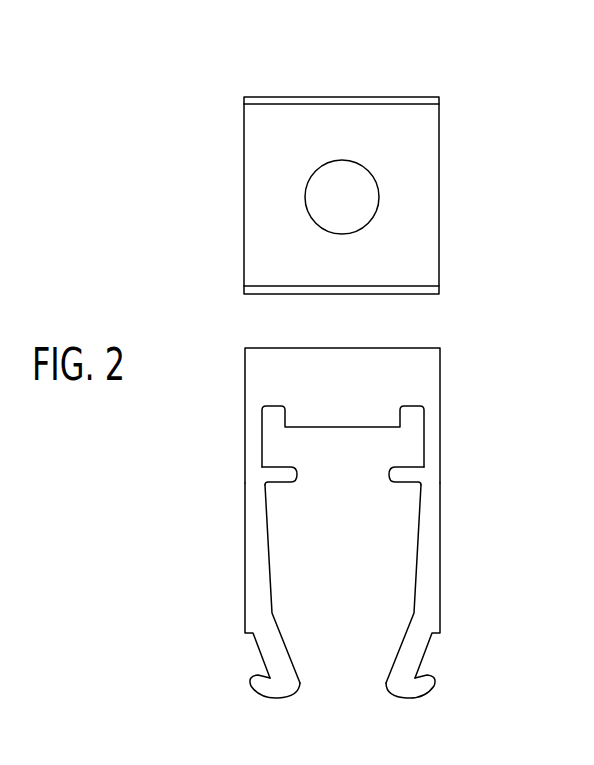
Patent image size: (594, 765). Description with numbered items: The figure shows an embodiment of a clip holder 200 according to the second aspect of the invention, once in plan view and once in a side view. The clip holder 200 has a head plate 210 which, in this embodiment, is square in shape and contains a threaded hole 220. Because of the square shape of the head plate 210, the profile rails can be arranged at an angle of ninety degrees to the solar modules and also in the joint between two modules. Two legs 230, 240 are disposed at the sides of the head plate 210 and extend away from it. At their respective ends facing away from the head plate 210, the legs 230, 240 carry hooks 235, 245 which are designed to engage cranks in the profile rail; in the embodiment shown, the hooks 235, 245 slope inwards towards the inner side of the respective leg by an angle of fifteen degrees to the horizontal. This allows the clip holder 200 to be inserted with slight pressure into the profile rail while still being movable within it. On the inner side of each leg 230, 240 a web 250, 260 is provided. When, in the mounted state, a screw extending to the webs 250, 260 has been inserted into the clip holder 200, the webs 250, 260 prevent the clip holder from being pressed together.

The clip holder 200 is at (473, 70).
The head plate 210 is at (425, 137).
The threaded hole 220 is at (380, 200).
The leg 230 is at (430, 545).
The hook 235 is at (420, 657).
The leg 240 is at (256, 548).
The hook 245 is at (273, 657).
The web 250 is at (393, 483).
The web 260 is at (292, 483).